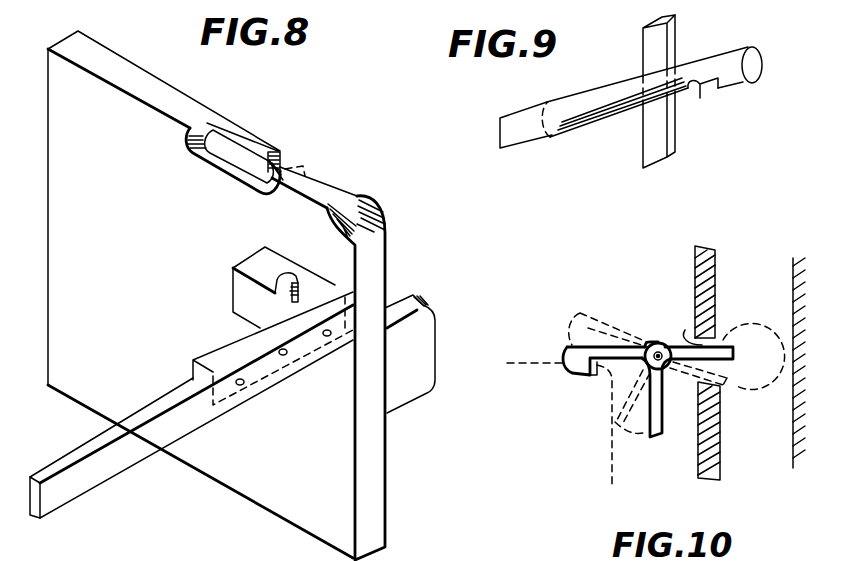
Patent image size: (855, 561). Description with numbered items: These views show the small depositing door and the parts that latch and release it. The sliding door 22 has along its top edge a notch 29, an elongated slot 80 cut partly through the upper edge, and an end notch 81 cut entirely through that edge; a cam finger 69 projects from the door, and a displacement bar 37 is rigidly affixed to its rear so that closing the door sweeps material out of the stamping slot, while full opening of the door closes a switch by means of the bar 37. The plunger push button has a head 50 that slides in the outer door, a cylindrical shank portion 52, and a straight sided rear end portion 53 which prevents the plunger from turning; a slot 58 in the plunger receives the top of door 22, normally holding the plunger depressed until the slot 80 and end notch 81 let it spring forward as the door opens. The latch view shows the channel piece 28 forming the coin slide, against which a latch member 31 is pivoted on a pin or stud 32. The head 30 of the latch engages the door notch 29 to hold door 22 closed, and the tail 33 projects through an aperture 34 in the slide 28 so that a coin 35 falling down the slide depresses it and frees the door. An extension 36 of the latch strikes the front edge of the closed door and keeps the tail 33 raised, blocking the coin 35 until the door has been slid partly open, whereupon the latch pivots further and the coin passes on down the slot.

In FIG. 8, the door 22 is at (133, 83).
In FIG. 9, the door 22 is at (659, 91).
In FIG. 10, the door 22 is at (612, 465).
In FIG. 8, the elongated slot 80 is at (223, 157).
In FIG. 8, the end notch 81 is at (283, 162).
In FIG. 8, the notch 29 is at (352, 201).
In FIG. 10, the notch 29 is at (588, 378).
In FIG. 8, the cam finger 69 is at (287, 283).
In FIG. 8, the displacement bar 37 is at (82, 457).
In FIG. 9, the head 50 is at (753, 60).
In FIG. 9, the cylindrical shank portion 52 is at (608, 124).
In FIG. 9, the straight sided rear end portion 53 is at (520, 137).
In FIG. 9, the slot 58 is at (708, 92).
In FIG. 10, the channel piece 28 is at (793, 263).
In FIG. 10, the head 30 is at (573, 353).
In FIG. 10, the latch member 31 is at (652, 345).
In FIG. 10, the pin or stud 32 is at (660, 351).
In FIG. 10, the tail 33 is at (718, 355).
In FIG. 10, the aperture 34 is at (687, 331).
In FIG. 10, the coin 35 is at (770, 383).
In FIG. 10, the extension 36 is at (656, 420).